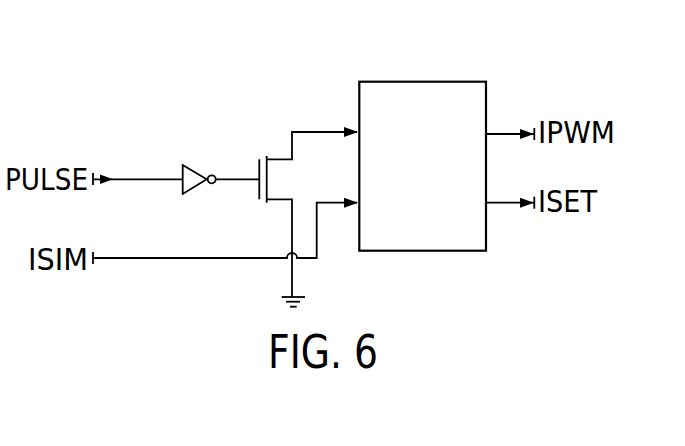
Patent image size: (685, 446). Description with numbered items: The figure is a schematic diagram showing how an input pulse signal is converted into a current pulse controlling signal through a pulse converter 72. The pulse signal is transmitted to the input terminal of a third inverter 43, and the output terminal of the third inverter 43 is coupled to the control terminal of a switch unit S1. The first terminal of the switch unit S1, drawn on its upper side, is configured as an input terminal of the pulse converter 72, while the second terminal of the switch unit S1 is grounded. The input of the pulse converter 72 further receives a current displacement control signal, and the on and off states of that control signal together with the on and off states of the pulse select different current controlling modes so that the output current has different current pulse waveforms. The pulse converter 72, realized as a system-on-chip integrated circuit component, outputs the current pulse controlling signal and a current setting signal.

The third inverter 43 is at (198, 163).
The switch unit S1 is at (308, 210).
The pulse converter 72 is at (414, 81).